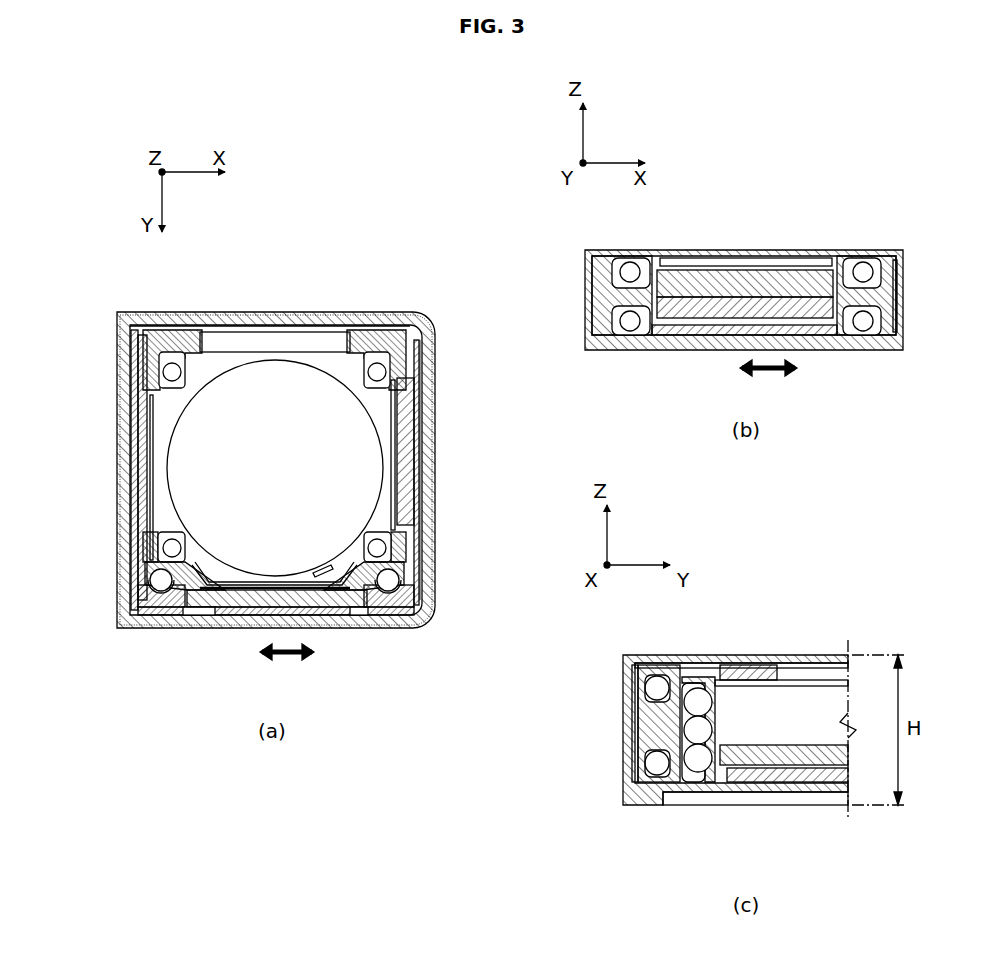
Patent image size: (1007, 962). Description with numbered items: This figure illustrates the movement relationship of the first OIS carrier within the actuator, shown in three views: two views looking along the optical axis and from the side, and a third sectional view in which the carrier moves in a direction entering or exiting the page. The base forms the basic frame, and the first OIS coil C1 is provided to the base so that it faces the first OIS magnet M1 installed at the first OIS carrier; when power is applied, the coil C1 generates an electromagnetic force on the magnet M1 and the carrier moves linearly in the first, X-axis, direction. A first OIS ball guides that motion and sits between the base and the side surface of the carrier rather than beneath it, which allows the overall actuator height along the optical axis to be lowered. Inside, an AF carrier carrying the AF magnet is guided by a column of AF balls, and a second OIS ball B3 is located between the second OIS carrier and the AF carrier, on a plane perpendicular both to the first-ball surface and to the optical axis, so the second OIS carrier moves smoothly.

The first OIS magnet M1 is at (405, 408).
The first OIS coil C1 is at (427, 455).
The second OIS ball B3 is at (172, 362).